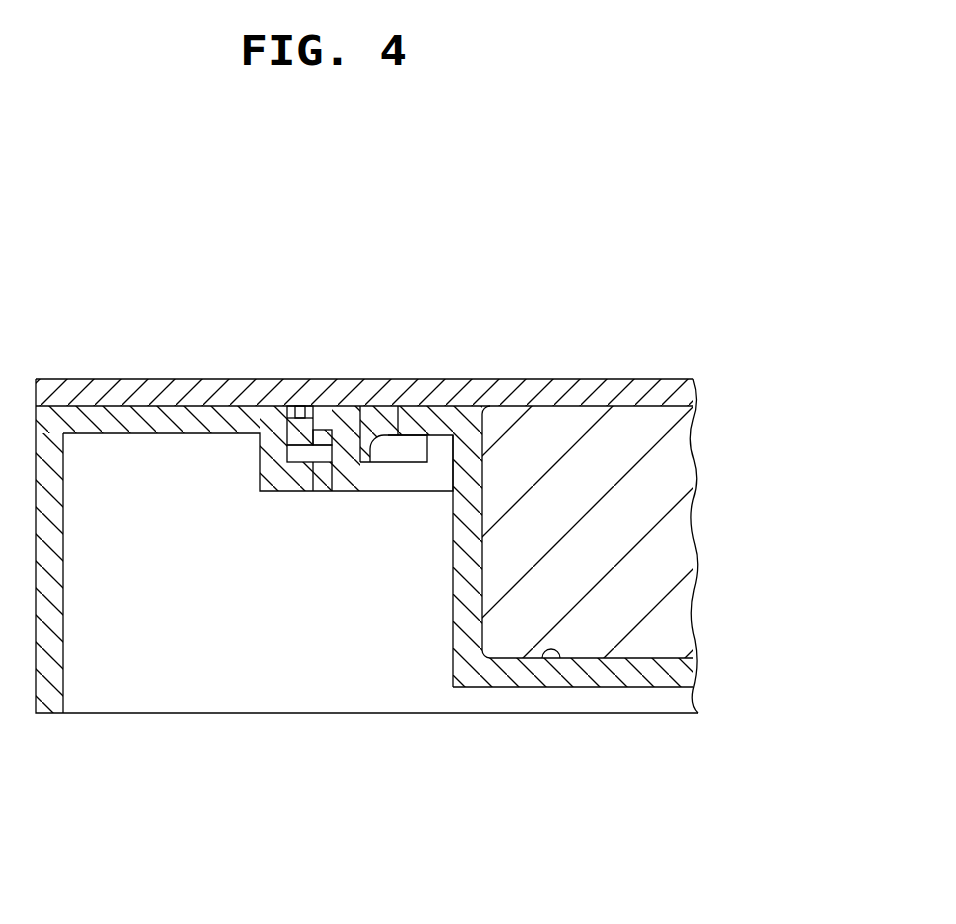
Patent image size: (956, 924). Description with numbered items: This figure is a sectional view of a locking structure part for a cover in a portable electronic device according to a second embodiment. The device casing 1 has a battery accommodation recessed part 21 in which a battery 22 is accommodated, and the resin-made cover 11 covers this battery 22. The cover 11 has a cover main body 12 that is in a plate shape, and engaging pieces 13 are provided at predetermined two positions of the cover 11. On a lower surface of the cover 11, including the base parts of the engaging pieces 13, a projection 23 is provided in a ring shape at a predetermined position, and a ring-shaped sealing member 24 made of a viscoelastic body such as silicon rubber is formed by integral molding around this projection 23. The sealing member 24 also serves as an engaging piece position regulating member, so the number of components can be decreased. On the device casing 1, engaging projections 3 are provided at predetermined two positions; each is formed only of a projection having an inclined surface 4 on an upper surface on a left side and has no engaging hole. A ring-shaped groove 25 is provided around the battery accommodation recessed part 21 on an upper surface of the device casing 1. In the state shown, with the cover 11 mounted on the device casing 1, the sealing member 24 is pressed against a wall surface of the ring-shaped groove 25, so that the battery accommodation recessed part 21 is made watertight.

The device casing 1 is at (108, 713).
The engaging projection 3 is at (406, 464).
The inclined surface 4 is at (383, 410).
The cover 11 is at (653, 380).
The cover main body 12 is at (127, 379).
The engaging piece 13 is at (347, 491).
The battery accommodation recessed part 21 is at (542, 661).
The battery 22 is at (595, 650).
The projection 23 is at (314, 422).
The sealing member 24 is at (308, 464).
The ring-shaped groove 25 is at (295, 413).